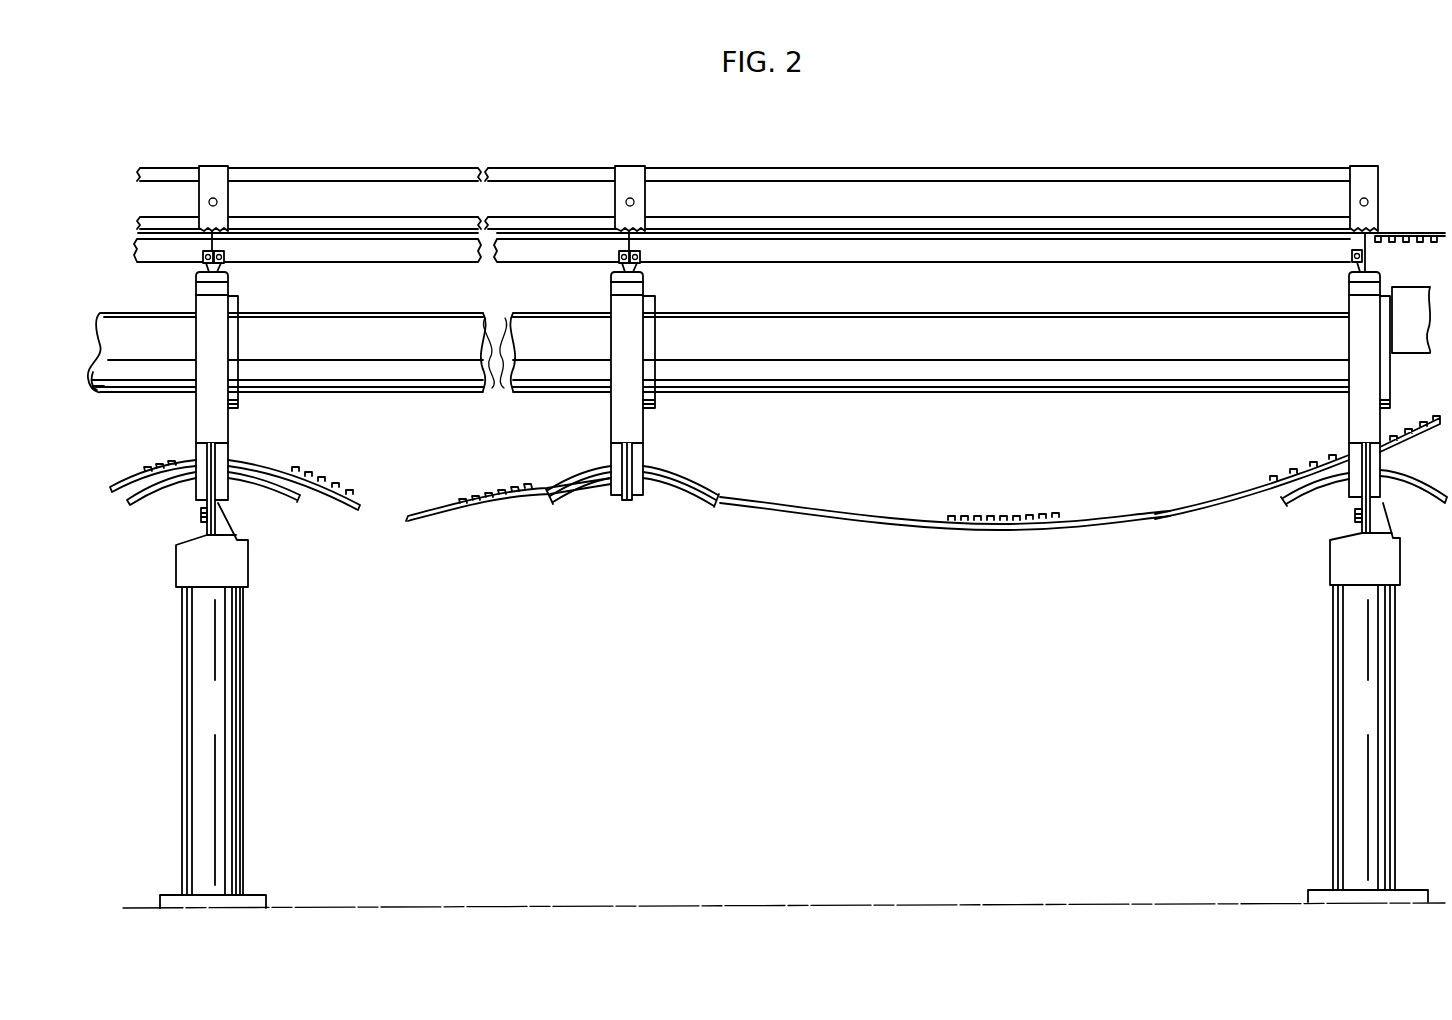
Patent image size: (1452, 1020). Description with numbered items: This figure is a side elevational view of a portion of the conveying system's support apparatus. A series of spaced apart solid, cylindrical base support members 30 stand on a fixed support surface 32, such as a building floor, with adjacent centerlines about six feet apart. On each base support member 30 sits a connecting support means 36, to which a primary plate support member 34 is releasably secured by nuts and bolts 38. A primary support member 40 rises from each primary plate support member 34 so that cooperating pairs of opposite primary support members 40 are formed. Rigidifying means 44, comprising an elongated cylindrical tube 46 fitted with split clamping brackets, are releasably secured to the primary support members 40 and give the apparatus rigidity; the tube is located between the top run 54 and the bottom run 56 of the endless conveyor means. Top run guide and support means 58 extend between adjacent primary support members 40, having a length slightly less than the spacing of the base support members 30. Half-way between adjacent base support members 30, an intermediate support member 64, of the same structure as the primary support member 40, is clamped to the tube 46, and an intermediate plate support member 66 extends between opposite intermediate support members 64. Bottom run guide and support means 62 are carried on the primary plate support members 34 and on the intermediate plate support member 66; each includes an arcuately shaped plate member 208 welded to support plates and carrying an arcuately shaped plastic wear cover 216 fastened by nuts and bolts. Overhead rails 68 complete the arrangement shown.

The base support member 30 is at (227, 692).
The fixed support surface 32 is at (283, 905).
The primary plate support member 34 is at (207, 507).
The connecting support means 36 is at (235, 563).
The nuts and bolts 38 is at (203, 520).
The primary support member 40 is at (217, 425).
The rigidifying means 44 is at (885, 406).
The elongated cylindrical tube 46 is at (935, 372).
The top run 54 is at (530, 237).
The bottom run 56 is at (990, 528).
The top run guide and support means 58 is at (738, 258).
The bottom run guide and support means 62 is at (295, 507).
The intermediate support member 64 is at (643, 430).
The intermediate plate support member 66 is at (620, 497).
The overhead rails 68 is at (715, 227).
The arcuately shaped plate member 208 is at (303, 500).
The arcuately shaped plastic wear cover 216 is at (275, 472).